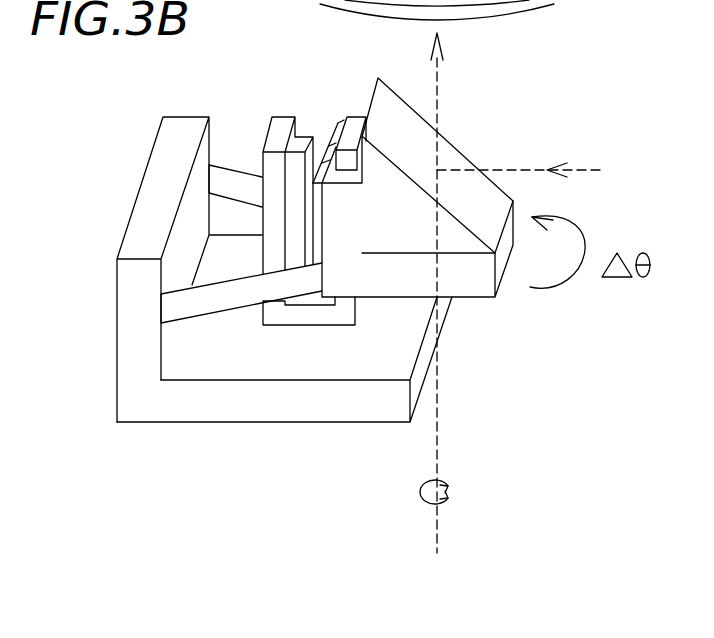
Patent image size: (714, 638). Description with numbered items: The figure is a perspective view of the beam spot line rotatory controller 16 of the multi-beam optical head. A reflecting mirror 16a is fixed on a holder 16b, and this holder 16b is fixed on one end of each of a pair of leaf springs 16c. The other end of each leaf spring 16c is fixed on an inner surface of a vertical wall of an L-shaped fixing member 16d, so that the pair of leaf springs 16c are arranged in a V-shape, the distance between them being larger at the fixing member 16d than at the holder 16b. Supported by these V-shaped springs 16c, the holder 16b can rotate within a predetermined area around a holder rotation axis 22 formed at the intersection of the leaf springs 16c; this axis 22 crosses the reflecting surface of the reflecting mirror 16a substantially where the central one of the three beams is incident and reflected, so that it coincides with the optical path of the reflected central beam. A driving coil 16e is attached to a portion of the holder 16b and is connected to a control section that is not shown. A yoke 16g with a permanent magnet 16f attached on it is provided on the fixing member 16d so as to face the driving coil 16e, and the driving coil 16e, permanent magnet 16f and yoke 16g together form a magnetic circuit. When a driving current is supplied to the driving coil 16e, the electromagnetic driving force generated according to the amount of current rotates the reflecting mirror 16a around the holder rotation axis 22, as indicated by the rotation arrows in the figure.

The beam spot line rotatory controller 16 is at (108, 497).
The reflecting mirror 16a is at (488, 228).
The holder 16b is at (390, 280).
The leaf springs 16c is at (228, 178).
The L-shaped fixing member 16d is at (133, 403).
The driving coil 16e is at (326, 143).
The permanent magnet 16f is at (322, 168).
The yoke 16g is at (282, 122).
The holder rotation axis 22 is at (510, 323).